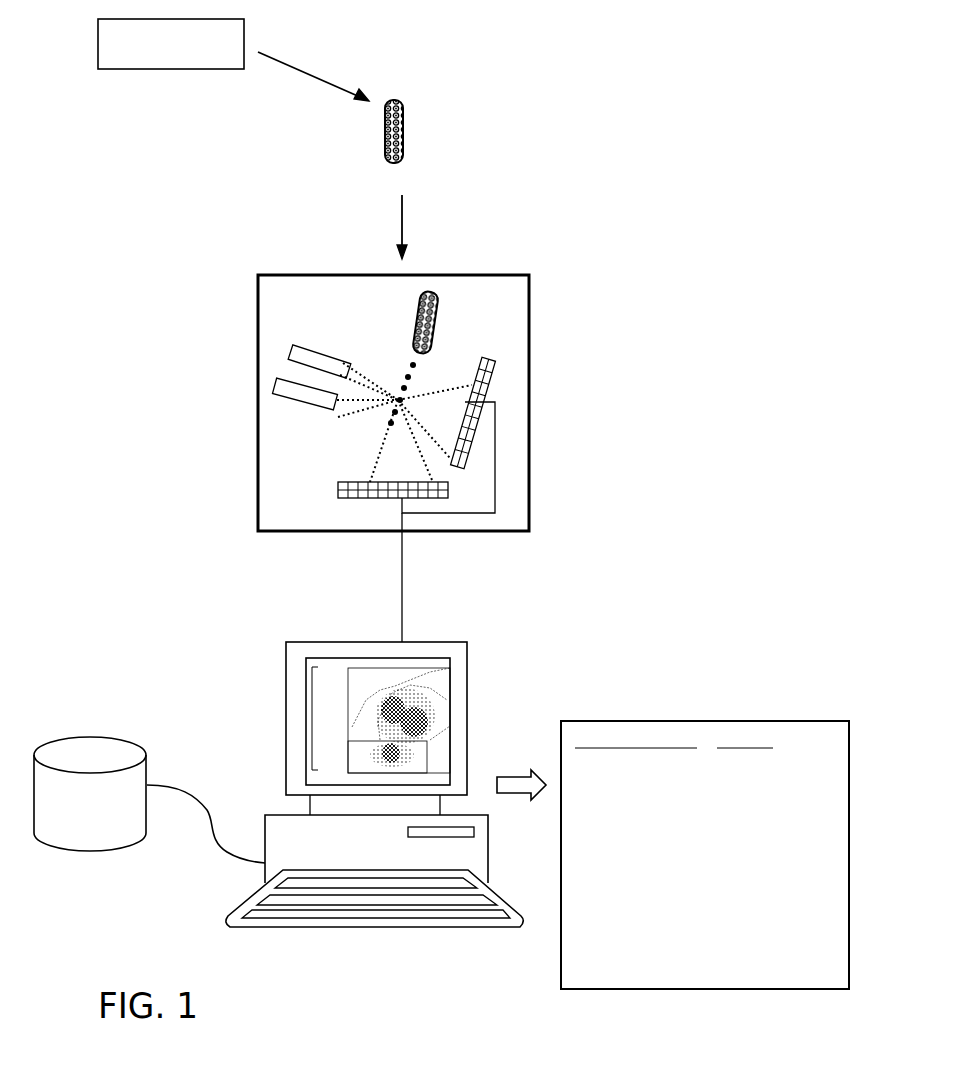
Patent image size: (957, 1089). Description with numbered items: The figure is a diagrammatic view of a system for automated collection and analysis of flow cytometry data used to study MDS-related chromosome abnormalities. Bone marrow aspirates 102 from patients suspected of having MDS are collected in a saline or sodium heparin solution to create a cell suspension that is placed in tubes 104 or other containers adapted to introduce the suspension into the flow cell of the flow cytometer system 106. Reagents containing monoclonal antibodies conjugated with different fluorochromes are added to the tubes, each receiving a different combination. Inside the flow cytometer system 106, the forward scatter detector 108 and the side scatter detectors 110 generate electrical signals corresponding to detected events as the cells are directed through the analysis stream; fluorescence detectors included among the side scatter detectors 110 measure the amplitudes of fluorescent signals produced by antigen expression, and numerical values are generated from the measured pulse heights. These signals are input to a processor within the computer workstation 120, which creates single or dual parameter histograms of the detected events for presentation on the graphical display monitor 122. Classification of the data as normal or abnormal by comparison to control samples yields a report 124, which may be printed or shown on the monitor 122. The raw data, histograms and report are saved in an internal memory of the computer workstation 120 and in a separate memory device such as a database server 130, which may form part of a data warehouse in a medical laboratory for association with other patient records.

The bone marrow aspirates 102 is at (115, 52).
The tubes 104 is at (402, 132).
The flow cytometer system 106 is at (513, 323).
The forward scatter detector 108 is at (468, 417).
The side scatter detectors 110 is at (370, 498).
The computer workstation 120 is at (290, 848).
The graphical display monitor 122 is at (290, 720).
The report 124 is at (561, 957).
The database server 130 is at (115, 814).